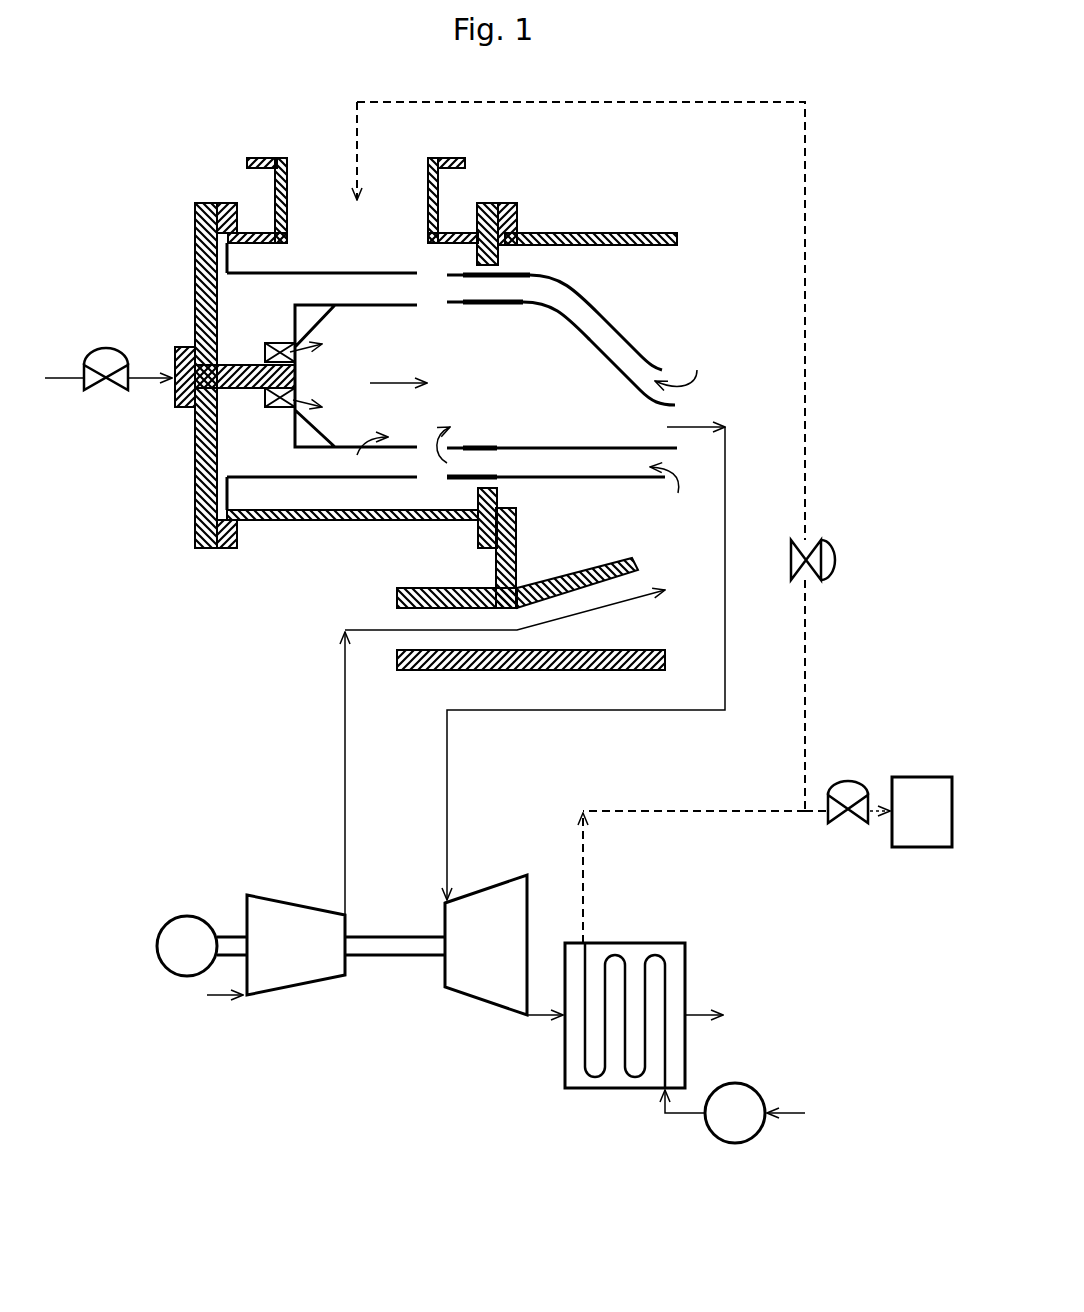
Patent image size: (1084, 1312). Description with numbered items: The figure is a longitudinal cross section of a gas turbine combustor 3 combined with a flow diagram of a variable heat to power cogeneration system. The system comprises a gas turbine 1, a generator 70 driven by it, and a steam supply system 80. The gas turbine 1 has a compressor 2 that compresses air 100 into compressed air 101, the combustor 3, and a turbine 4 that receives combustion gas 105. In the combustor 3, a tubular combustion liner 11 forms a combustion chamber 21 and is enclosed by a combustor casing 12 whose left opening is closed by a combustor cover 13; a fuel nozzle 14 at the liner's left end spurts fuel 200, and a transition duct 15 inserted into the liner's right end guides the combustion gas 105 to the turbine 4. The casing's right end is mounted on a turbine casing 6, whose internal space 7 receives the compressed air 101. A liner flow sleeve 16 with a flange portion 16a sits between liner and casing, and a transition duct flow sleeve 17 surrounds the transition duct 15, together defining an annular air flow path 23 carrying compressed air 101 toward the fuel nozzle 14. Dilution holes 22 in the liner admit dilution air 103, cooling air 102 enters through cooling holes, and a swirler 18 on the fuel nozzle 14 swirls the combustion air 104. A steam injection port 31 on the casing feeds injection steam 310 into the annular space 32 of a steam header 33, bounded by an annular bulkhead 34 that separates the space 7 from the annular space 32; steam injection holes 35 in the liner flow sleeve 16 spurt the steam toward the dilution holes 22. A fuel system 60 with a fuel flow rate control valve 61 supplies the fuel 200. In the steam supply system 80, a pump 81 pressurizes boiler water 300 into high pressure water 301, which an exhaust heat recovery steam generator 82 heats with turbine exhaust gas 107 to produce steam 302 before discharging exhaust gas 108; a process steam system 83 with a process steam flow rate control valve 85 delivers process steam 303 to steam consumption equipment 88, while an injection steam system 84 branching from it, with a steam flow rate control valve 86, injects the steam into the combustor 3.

The gas turbine 1 is at (390, 1003).
The compressor 2 is at (288, 922).
The combustor 3 is at (223, 172).
The turbine 4 is at (490, 902).
The turbine casing 6 is at (600, 233).
The space inside the turbine casing 7 is at (610, 283).
The combustion liner 11 is at (338, 306).
The combustor casing 12 is at (282, 520).
The combustor cover 13 is at (204, 548).
The fuel nozzle 14 is at (247, 388).
The transition duct 15 is at (590, 348).
The liner flow sleeve 16 is at (315, 272).
The flange portion 16a is at (225, 258).
The transition duct flow sleeve 17 is at (612, 337).
The swirler 18 is at (278, 343).
The combustion chamber 21 is at (323, 388).
The dilution holes 22 is at (447, 306).
The air flow path 23 is at (508, 299).
The steam injection port 31 is at (268, 158).
The annular space 32 is at (338, 264).
The steam header 33 is at (330, 524).
The annular bulkhead 34 is at (500, 250).
The steam injection holes 35 is at (463, 274).
The fuel system 60 is at (75, 365).
The fuel flow rate control valve 61 is at (107, 348).
The generator 70 is at (182, 914).
The steam supply system 80 is at (730, 838).
The pump 81 is at (745, 1085).
The exhaust heat recovery steam generator 82 is at (672, 942).
The process steam system 83 is at (816, 815).
The injection steam system 84 is at (808, 398).
The process steam flow rate control valve 85 is at (845, 782).
The steam flow rate control valve 86 is at (835, 560).
The steam consumption equipment 88 is at (922, 848).
The air 100 is at (222, 999).
The compressed air 101 is at (693, 370).
The cooling air 102 is at (356, 467).
The dilution air 103 is at (452, 432).
The combustion air 104 is at (268, 358).
The combustion gas 105 is at (386, 382).
The turbine exhaust gas 107 is at (540, 1020).
The exhaust gas 108 is at (703, 1014).
The fuel 200 is at (63, 380).
The boiler water 300 is at (797, 1112).
The high pressure water 301 is at (672, 1118).
The steam 302 is at (637, 808).
The process steam 303 is at (872, 822).
The injection steam 310 is at (362, 183).